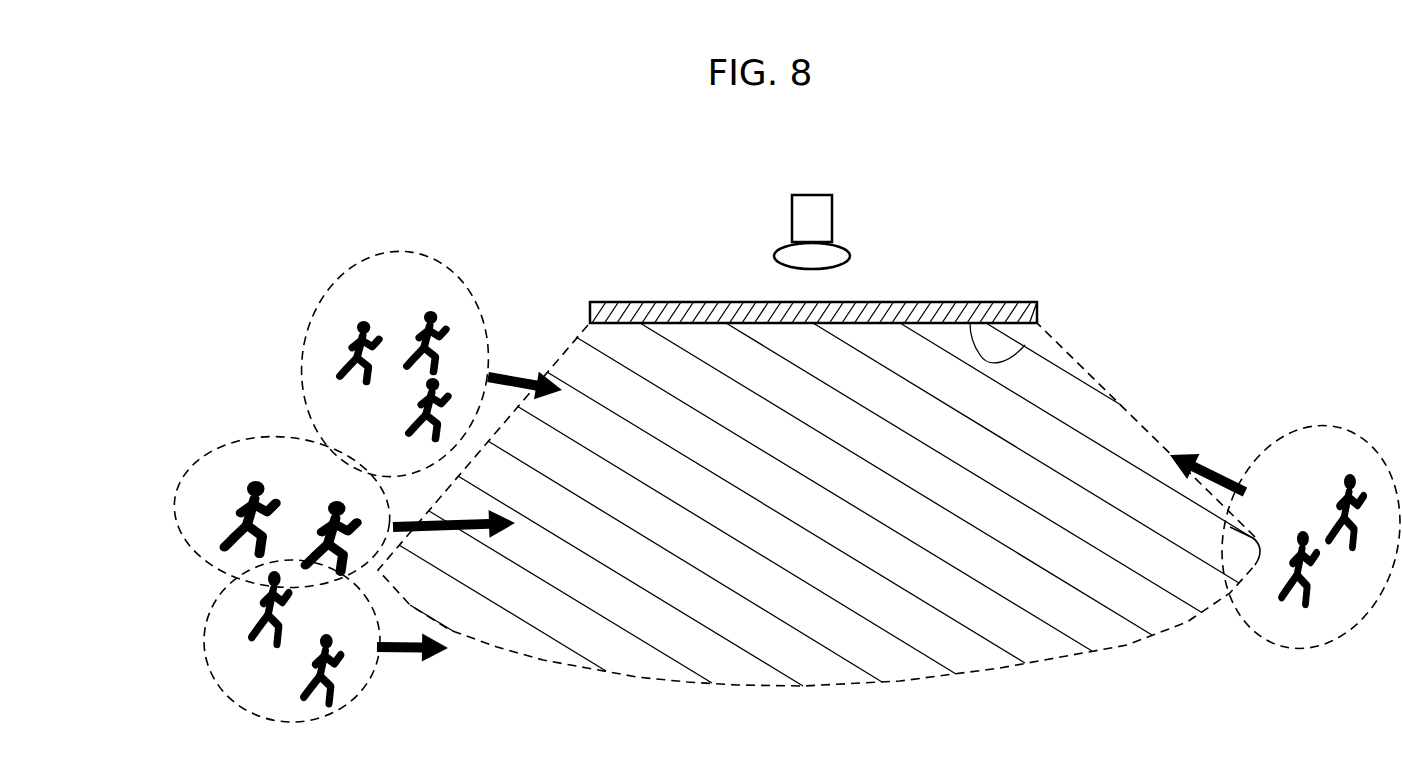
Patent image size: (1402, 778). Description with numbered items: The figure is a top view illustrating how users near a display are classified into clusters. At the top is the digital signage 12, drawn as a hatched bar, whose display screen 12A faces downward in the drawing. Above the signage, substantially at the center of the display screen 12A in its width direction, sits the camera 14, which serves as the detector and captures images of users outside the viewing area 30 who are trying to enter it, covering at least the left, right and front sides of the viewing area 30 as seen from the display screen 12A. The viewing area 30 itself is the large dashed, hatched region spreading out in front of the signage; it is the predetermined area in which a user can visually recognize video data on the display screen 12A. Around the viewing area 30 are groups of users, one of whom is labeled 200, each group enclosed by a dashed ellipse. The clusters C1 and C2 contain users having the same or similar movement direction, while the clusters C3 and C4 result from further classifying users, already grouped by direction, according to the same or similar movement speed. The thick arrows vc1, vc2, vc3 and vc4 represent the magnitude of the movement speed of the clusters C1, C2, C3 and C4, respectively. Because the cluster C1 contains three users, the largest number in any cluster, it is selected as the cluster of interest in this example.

The digital signage 12 is at (942, 302).
The display screen 12A is at (1025, 345).
The camera 14 is at (834, 226).
The viewing area 30 is at (1093, 370).
The person (pedestrian) 200 is at (340, 366).
The cluster C1 is at (460, 273).
The cluster C2 is at (1350, 428).
The cluster C3 is at (175, 512).
The cluster C4 is at (205, 650).
The movement speed of cluster C1 vc1 is at (510, 377).
The movement speed of cluster C2 vc2 is at (1220, 470).
The movement speed of cluster C3 vc3 is at (460, 532).
The movement speed of cluster C4 vc4 is at (393, 655).